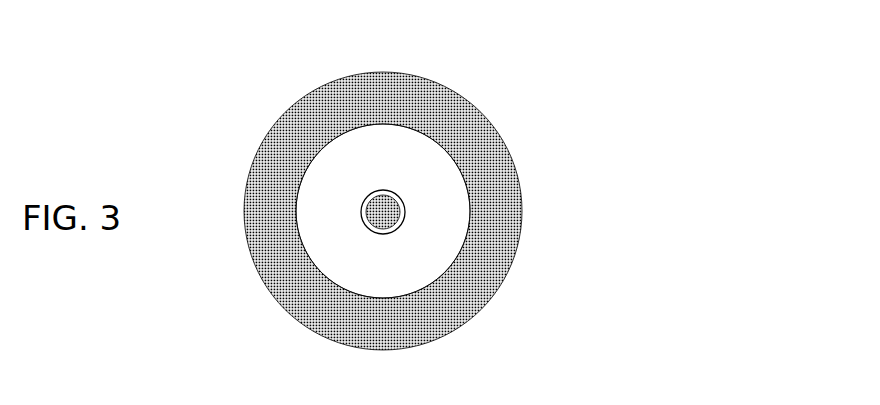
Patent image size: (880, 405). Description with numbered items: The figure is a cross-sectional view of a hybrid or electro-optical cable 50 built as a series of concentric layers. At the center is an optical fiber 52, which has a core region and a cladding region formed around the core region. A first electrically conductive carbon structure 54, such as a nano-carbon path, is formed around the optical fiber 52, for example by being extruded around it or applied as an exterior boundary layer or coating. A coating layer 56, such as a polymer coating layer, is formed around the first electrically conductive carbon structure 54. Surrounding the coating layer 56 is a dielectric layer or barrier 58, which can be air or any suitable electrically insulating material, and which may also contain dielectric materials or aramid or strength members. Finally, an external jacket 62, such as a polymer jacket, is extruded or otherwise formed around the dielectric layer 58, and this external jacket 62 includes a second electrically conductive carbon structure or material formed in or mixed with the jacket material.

The hybrid or electro-optical cable 50 is at (745, 57).
The optical fiber 52 is at (385, 210).
The first electrically conductive carbon structure 54 is at (383, 190).
The coating layer 56 is at (407, 213).
The dielectric layer or barrier 58 is at (428, 258).
The external jacket 62 is at (325, 98).